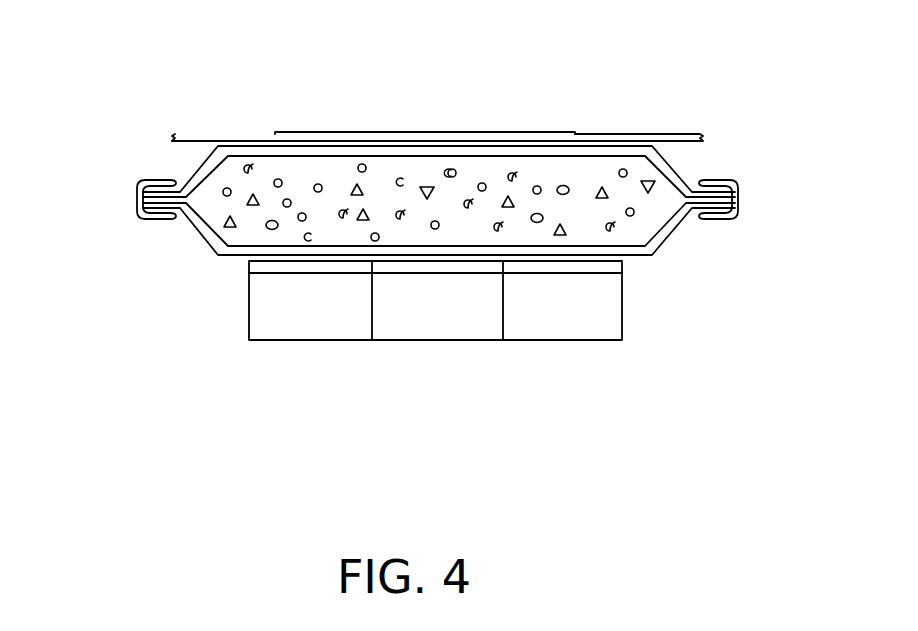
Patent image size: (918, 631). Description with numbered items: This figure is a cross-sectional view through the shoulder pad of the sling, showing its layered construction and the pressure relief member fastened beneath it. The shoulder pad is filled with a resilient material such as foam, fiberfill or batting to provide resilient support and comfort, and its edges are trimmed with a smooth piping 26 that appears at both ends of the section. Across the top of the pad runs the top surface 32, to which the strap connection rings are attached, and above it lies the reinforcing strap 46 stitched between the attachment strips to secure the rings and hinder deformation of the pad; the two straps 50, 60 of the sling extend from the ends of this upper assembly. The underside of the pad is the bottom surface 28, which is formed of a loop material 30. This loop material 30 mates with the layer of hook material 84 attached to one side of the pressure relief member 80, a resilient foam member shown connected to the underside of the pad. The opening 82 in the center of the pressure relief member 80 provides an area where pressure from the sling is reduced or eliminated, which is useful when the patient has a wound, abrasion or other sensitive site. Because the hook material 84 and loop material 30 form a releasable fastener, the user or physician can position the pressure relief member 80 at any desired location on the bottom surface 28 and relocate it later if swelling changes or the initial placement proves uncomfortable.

The piping 26 is at (135, 192).
The bottom surface 28 is at (224, 260).
The loop material 30 is at (208, 240).
The top surface 32 is at (617, 143).
The reinforcing strap 46 is at (538, 132).
The strap 50 is at (673, 135).
The strap 60 is at (187, 134).
The pressure relief member 80 is at (610, 323).
The opening 82 is at (435, 340).
The hook material 84 is at (610, 265).